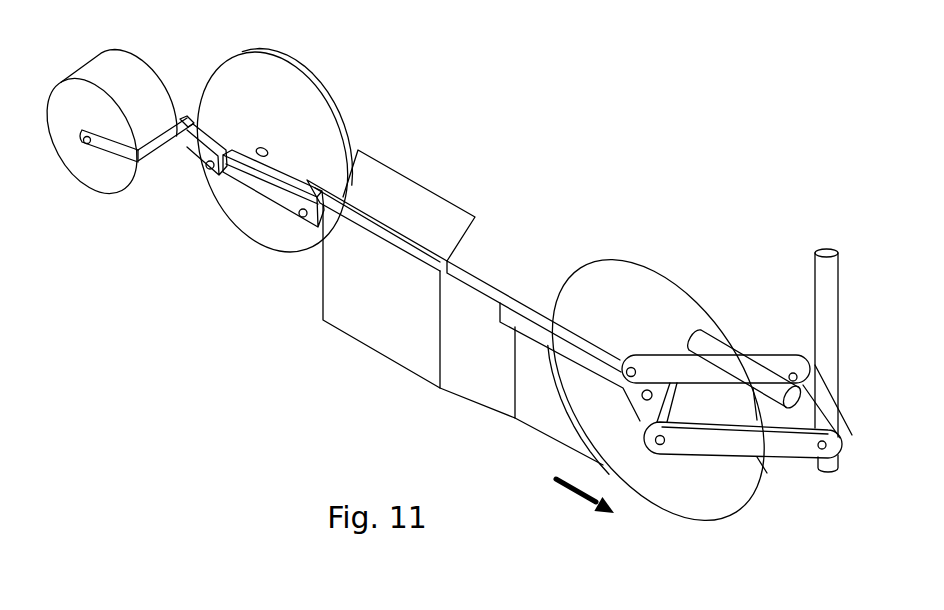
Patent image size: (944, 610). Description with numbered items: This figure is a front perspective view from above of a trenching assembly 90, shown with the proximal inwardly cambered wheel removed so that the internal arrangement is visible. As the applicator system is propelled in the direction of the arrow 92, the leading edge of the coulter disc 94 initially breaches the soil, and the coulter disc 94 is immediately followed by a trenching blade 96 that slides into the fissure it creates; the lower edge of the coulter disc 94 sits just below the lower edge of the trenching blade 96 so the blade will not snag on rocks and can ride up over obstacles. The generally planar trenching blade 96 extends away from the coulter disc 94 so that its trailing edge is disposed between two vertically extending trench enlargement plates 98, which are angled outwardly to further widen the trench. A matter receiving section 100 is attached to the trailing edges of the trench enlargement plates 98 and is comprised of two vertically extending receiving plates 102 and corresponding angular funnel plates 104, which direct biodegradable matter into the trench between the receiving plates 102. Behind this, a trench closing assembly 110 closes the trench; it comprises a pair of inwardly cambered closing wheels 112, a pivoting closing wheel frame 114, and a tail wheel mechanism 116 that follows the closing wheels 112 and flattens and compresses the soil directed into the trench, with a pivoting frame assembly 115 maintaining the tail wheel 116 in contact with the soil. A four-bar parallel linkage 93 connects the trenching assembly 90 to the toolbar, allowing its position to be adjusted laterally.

The trenching assembly 90 is at (586, 124).
The arrow 92 is at (577, 495).
The four-bar parallel linkage 93 is at (767, 445).
The coulter disc 94 is at (652, 287).
The trenching blade 96 is at (550, 418).
The trench enlargement plates 98 is at (482, 387).
The matter receiving section 100 is at (324, 362).
The receiving plates 102 is at (397, 340).
The angular funnel plates 104 is at (415, 195).
The trench closing assembly 110 is at (131, 266).
The inwardly cambered closing wheels 112 is at (298, 70).
The pivoting closing wheel frame 114 is at (278, 205).
The pivoting frame assembly 115 is at (185, 158).
The tail wheel mechanism 116 is at (127, 68).